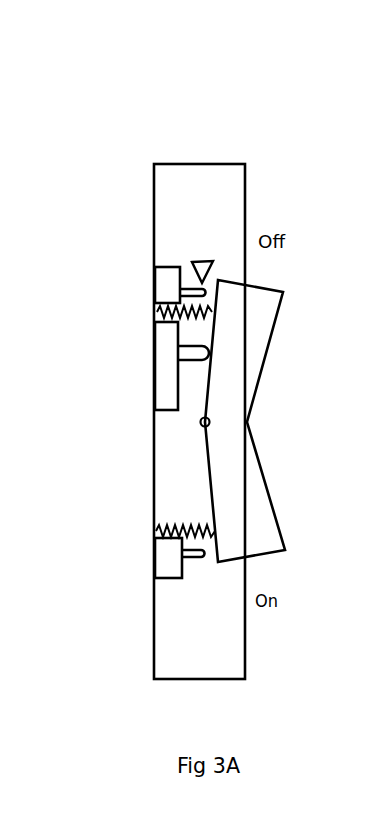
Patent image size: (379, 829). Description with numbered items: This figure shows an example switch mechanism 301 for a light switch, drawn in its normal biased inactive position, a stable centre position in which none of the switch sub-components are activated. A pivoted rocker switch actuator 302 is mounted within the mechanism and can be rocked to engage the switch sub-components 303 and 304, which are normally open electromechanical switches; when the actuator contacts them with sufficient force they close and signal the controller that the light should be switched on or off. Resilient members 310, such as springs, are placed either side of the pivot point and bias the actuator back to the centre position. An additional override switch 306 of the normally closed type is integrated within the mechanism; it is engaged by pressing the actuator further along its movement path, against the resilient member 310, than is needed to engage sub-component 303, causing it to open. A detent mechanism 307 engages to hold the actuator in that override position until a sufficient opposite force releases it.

The switch mechanism 301 is at (138, 122).
The switch actuator 302 is at (262, 337).
The switch sub-component 303 is at (172, 280).
The switch sub-component 304 is at (158, 577).
The override switch 306 is at (158, 382).
The detent mechanism 307 is at (199, 266).
The resilient member 310 is at (158, 316).